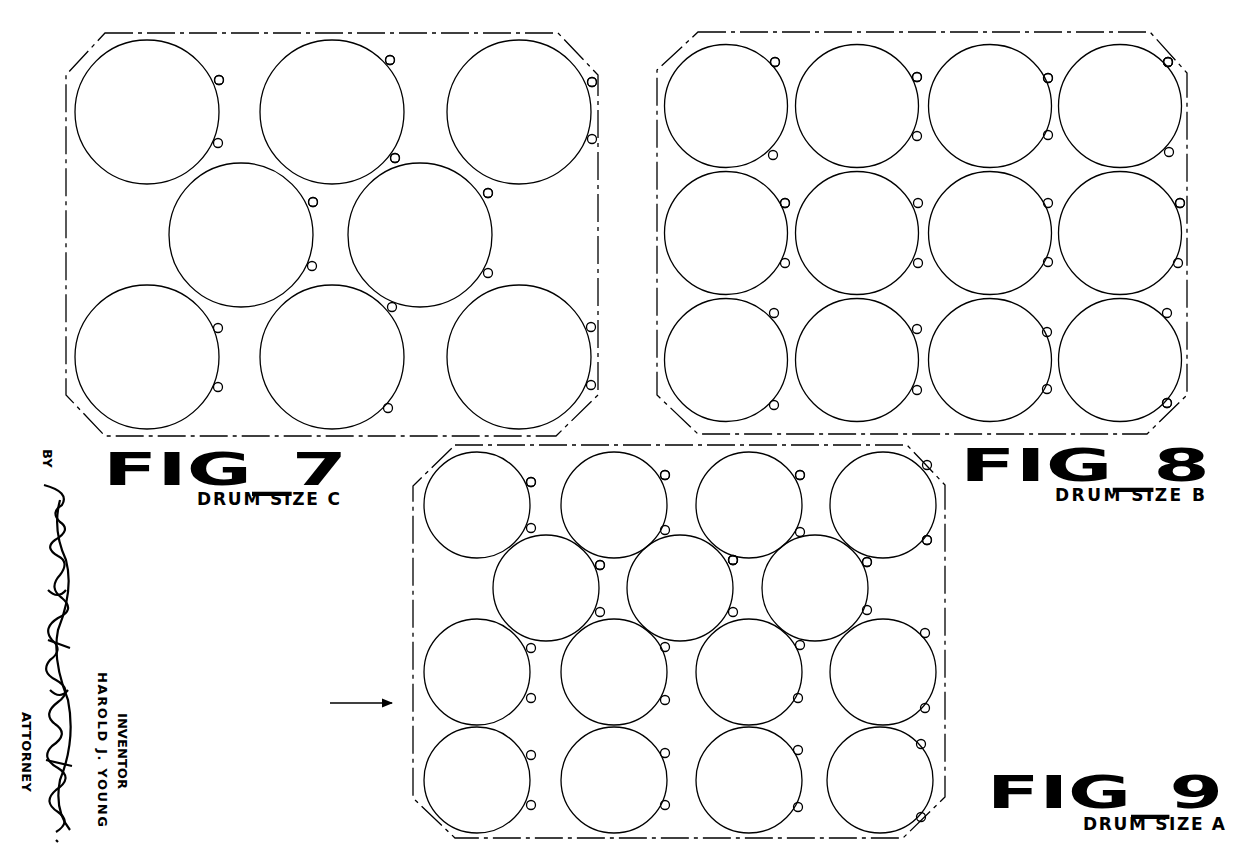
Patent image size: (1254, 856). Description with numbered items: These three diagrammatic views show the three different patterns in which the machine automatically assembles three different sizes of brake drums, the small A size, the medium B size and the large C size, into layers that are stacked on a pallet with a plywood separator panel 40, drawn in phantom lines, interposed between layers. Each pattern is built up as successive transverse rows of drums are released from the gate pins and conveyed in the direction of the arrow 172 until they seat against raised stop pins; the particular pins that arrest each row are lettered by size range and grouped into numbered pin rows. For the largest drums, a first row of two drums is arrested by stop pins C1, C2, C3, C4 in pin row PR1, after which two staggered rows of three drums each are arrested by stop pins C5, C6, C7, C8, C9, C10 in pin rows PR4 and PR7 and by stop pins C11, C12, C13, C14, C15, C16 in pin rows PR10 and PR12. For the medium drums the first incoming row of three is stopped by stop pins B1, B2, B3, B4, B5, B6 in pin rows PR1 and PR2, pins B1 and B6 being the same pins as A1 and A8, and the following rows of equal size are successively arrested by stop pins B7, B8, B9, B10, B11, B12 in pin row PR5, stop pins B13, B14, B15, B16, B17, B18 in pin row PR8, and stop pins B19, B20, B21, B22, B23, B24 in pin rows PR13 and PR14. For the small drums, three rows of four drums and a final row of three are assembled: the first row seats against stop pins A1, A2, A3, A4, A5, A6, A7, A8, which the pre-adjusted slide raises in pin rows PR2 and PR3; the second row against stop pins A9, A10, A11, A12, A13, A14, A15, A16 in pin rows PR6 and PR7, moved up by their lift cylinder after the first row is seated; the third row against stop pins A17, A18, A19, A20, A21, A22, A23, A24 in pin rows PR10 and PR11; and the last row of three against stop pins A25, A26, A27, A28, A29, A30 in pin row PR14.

In FIG. 7, the plywood separator panel 40 is at (66, 262).
In FIG. 8, the plywood separator panel 40 is at (1187, 300).
In FIG. 9, the plywood separator panel 40 is at (413, 660).
In FIG. 9, the arrow 172 is at (355, 703).
In FIG. 7, the stop pin C1 is at (587, 83).
In FIG. 7, the stop pin C2 is at (587, 139).
In FIG. 7, the stop pin C3 is at (586, 328).
In FIG. 7, the stop pin C4 is at (586, 385).
In FIG. 7, the stop pin C5 is at (386, 63).
In FIG. 7, the stop pin C6 is at (390, 158).
In FIG. 9, the stop pin C6 is at (699, 553).
In FIG. 7, the stop pin C7 is at (484, 196).
In FIG. 7, the stop pin C8 is at (483, 273).
In FIG. 7, the stop pin C9 is at (388, 310).
In FIG. 7, the stop pin C10 is at (383, 408).
In FIG. 7, the stop pin C11 is at (214, 81).
In FIG. 7, the stop pin C12 is at (213, 143).
In FIG. 7, the stop pin C13 is at (308, 203).
In FIG. 7, the stop pin C14 is at (307, 266).
In FIG. 7, the stop pin C15 is at (213, 328).
In FIG. 7, the stop pin C16 is at (213, 388).
In FIG. 8, the stop pin B1 is at (1164, 65).
In FIG. 8, the stop pin B2 is at (1165, 148).
In FIG. 8, the stop pin B3 is at (1175, 205).
In FIG. 8, the stop pin B4 is at (1173, 264).
In FIG. 8, the stop pin B5 is at (1163, 316).
In FIG. 8, the stop pin B6 is at (1162, 403).
In FIG. 8, the stop pin B7 is at (1043, 80).
In FIG. 8, the stop pin B8 is at (1043, 136).
In FIG. 8, the stop pin B9 is at (1043, 204).
In FIG. 8, the stop pin B10 is at (1043, 263).
In FIG. 8, the stop pin B11 is at (1042, 333).
In FIG. 8, the stop pin B12 is at (1042, 390).
In FIG. 8, the stop pin B13 is at (912, 78).
In FIG. 8, the stop pin B14 is at (912, 137).
In FIG. 8, the stop pin B15 is at (913, 204).
In FIG. 8, the stop pin B16 is at (913, 264).
In FIG. 8, the stop pin B17 is at (912, 331).
In FIG. 8, the stop pin B18 is at (912, 391).
In FIG. 8, the stop pin B19 is at (771, 65).
In FIG. 8, the stop pin B20 is at (768, 155).
In FIG. 8, the stop pin B21 is at (780, 204).
In FIG. 8, the stop pin B22 is at (780, 263).
In FIG. 8, the stop pin B23 is at (770, 317).
In FIG. 8, the stop pin B24 is at (769, 405).
In FIG. 8, the stop pin A1 is at (1173, 62).
In FIG. 9, the stop pin A1 is at (922, 467).
In FIG. 9, the stop pin A2 is at (922, 540).
In FIG. 9, the stop pin A3 is at (862, 564).
In FIG. 9, the stop pin A4 is at (862, 611).
In FIG. 9, the stop pin A5 is at (920, 635).
In FIG. 9, the stop pin A6 is at (920, 708).
In FIG. 9, the stop pin A7 is at (916, 746).
In FIG. 8, the stop pin A8 is at (1170, 406).
In FIG. 9, the stop pin A8 is at (916, 817).
In FIG. 9, the stop pin A9 is at (795, 476).
In FIG. 9, the stop pin A10 is at (795, 534).
In FIG. 7, the stop pin A11 is at (359, 145).
In FIG. 9, the stop pin A11 is at (728, 562).
In FIG. 9, the stop pin A12 is at (728, 613).
In FIG. 9, the stop pin A13 is at (795, 647).
In FIG. 9, the stop pin A14 is at (793, 699).
In FIG. 9, the stop pin A15 is at (793, 752).
In FIG. 9, the stop pin A16 is at (793, 808).
In FIG. 9, the stop pin A17 is at (660, 478).
In FIG. 9, the stop pin A18 is at (660, 532).
In FIG. 9, the stop pin A19 is at (595, 567).
In FIG. 9, the stop pin A20 is at (595, 613).
In FIG. 9, the stop pin A21 is at (660, 649).
In FIG. 9, the stop pin A22 is at (660, 701).
In FIG. 9, the stop pin A23 is at (660, 755).
In FIG. 9, the stop pin A24 is at (660, 805).
In FIG. 9, the stop pin A25 is at (527, 485).
In FIG. 9, the stop pin A26 is at (527, 530).
In FIG. 9, the stop pin A27 is at (526, 650).
In FIG. 9, the stop pin A28 is at (526, 699).
In FIG. 9, the stop pin A29 is at (526, 757).
In FIG. 9, the stop pin A30 is at (526, 806).
In FIG. 7, the pin row PR1 is at (593, 75).
In FIG. 8, the pin row PR1 is at (1181, 197).
In FIG. 8, the pin row PR2 is at (1169, 56).
In FIG. 9, the pin row PR2 is at (927, 534).
In FIG. 9, the pin row PR3 is at (864, 556).
In FIG. 7, the pin row PR4 is at (491, 186).
In FIG. 8, the pin row PR5 is at (1048, 72).
In FIG. 9, the pin row PR6 is at (798, 468).
In FIG. 7, the pin row PR7 is at (393, 54).
In FIG. 9, the pin row PR7 is at (731, 554).
In FIG. 8, the pin row PR8 is at (915, 70).
In FIG. 7, the pin row PR10 is at (306, 184).
In FIG. 9, the pin row PR10 is at (664, 469).
In FIG. 9, the pin row PR11 is at (597, 558).
In FIG. 7, the pin row PR12 is at (217, 73).
In FIG. 8, the pin row PR13 is at (788, 198).
In FIG. 8, the pin row PR14 is at (777, 57).
In FIG. 9, the pin row PR14 is at (529, 476).